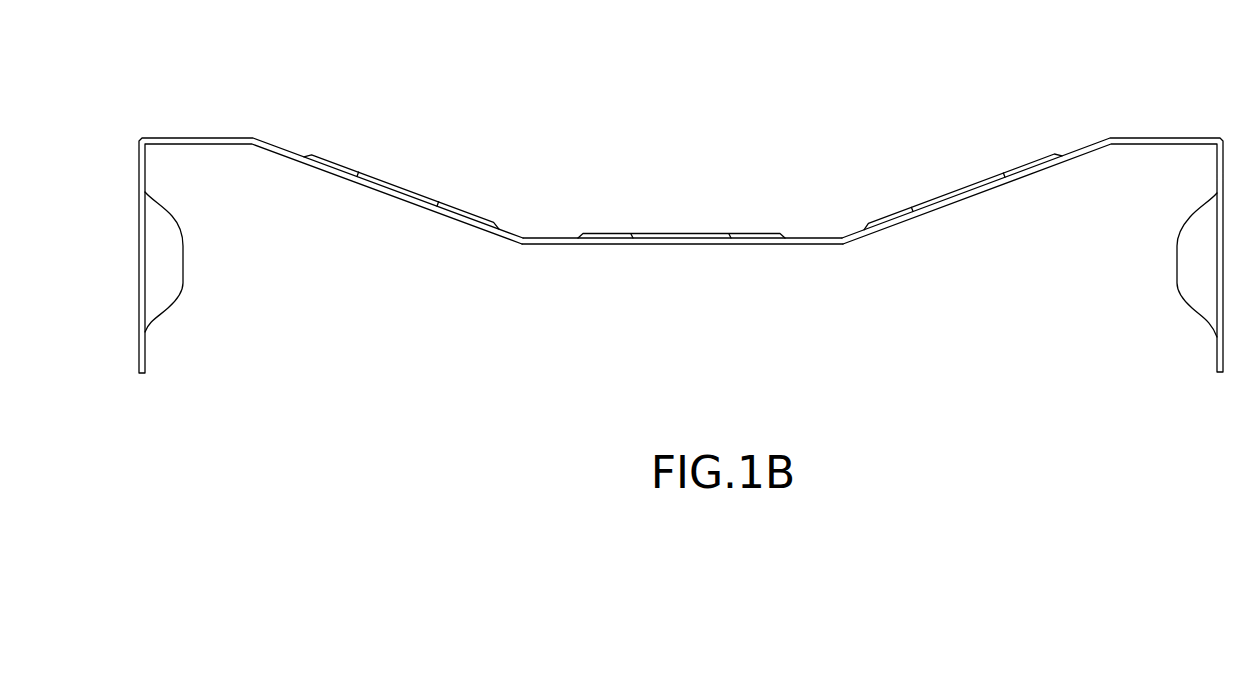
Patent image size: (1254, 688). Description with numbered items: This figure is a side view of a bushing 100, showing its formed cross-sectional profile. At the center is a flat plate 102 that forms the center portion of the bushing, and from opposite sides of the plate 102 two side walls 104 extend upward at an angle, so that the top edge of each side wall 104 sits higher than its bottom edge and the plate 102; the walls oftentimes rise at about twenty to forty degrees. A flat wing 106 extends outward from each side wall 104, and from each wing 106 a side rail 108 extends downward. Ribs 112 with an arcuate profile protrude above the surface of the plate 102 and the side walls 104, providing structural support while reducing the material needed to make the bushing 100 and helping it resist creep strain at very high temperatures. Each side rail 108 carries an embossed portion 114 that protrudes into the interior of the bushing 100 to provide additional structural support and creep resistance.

The bushing 100 is at (577, 368).
The flat plate 102 is at (810, 245).
The side wall 104 is at (432, 208).
The flat wing 106 is at (1137, 138).
The side rail 108 is at (1215, 345).
The rib 112 is at (655, 234).
The embossed portion 114 is at (183, 288).